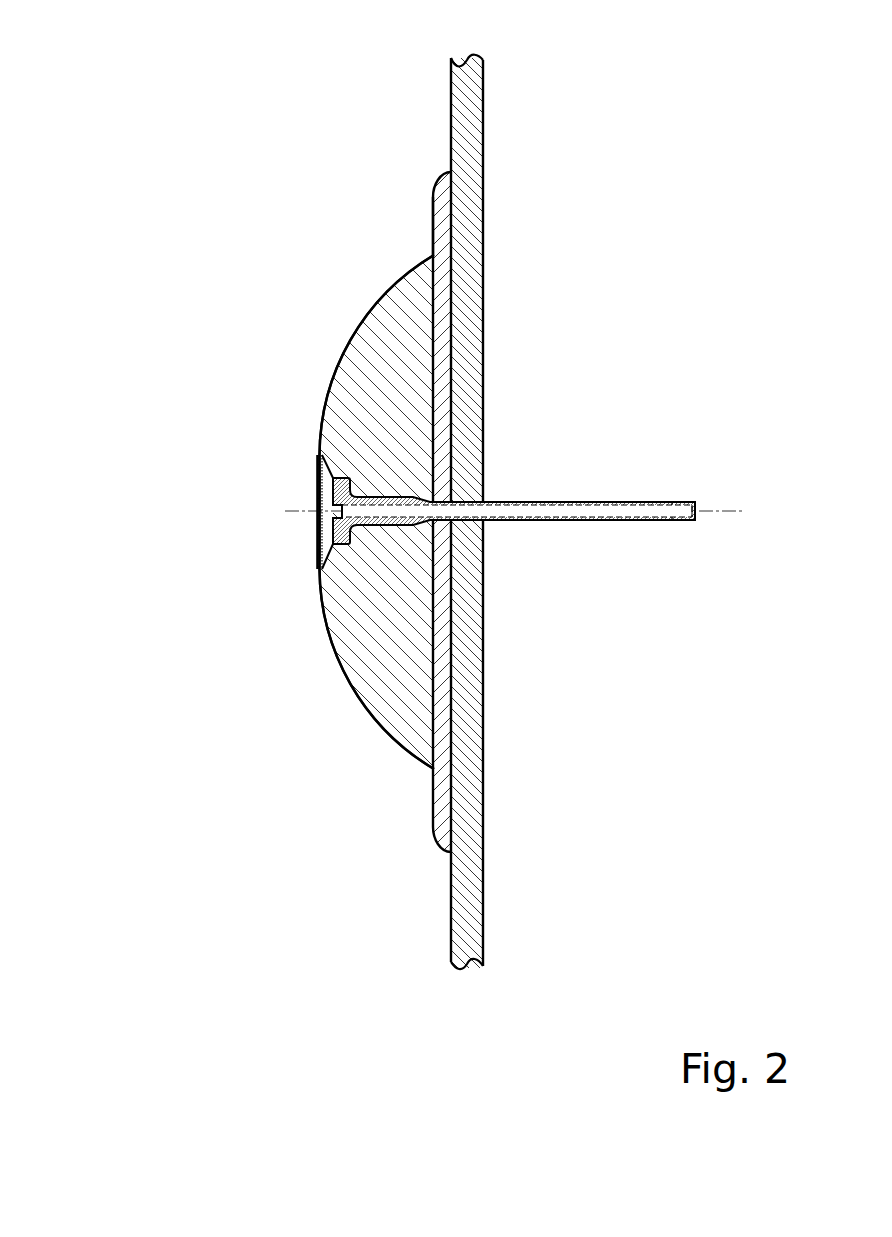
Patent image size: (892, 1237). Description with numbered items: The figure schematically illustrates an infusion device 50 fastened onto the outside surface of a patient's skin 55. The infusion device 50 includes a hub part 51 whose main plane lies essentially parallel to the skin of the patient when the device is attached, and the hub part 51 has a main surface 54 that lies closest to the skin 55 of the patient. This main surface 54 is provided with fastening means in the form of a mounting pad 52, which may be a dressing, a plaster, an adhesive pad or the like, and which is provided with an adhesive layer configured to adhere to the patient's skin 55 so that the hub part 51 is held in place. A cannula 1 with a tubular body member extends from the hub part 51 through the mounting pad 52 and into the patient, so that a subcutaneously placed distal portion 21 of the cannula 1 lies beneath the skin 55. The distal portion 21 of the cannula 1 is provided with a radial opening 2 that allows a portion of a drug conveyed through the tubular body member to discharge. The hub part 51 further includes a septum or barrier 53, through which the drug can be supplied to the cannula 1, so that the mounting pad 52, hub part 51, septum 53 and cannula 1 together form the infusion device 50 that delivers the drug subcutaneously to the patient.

The cannula 1 is at (573, 440).
The radial opening 2 is at (672, 502).
The distal portion 21 is at (690, 555).
The infusion device 50 is at (287, 283).
The hub part 51 is at (362, 588).
The mounting pad 52 is at (433, 197).
The septum 53 is at (318, 488).
The main surface 54 is at (435, 333).
The skin 55 is at (450, 93).